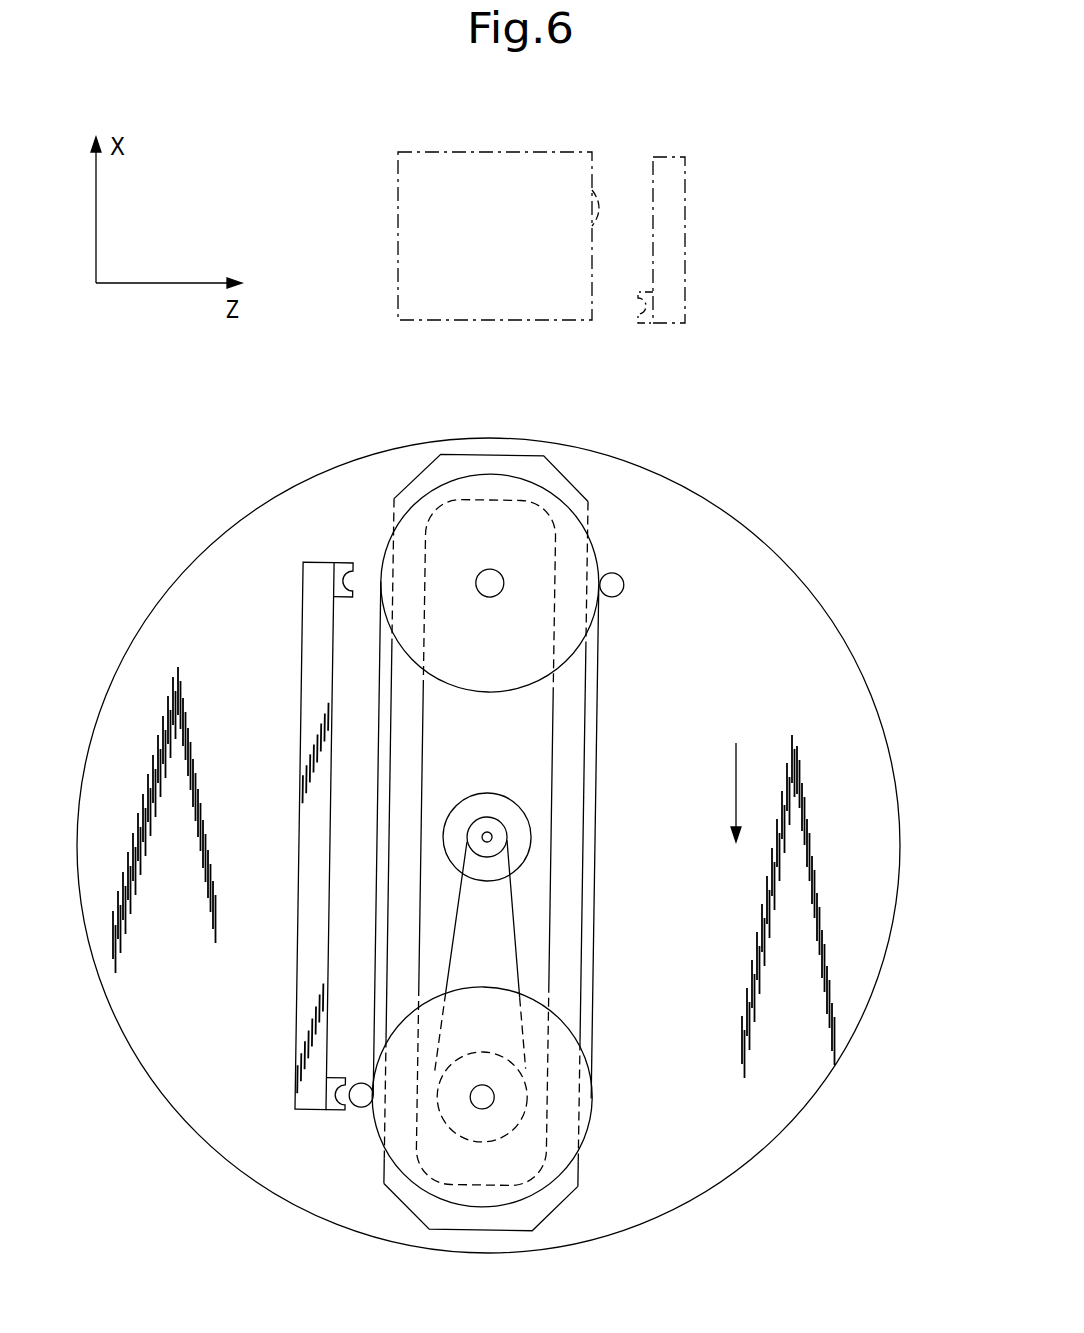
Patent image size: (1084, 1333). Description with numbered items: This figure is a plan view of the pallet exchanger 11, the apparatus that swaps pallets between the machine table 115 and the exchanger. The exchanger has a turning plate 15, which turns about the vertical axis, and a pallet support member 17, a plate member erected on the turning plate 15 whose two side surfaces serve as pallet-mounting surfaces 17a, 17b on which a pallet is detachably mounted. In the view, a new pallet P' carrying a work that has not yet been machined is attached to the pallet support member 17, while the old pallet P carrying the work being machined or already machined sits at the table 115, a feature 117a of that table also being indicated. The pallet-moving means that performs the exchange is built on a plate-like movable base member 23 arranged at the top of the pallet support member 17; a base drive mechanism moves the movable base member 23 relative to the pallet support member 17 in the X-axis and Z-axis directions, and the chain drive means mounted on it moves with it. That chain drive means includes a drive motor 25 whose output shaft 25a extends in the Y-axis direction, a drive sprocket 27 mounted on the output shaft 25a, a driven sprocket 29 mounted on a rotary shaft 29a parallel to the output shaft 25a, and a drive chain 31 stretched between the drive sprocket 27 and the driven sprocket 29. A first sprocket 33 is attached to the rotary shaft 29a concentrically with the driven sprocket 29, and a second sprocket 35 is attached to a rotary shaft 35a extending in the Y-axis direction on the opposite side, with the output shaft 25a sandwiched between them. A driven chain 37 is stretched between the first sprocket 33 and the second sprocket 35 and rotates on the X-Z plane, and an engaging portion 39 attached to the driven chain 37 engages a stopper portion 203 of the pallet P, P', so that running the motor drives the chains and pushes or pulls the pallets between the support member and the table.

The pallet exchanger 11 is at (501, 774).
The turning plate 15 is at (853, 698).
The pallet support member 17 is at (446, 811).
The pallet-mounting surface 17a is at (583, 843).
The pallet-mounting surface 17b is at (389, 841).
The movable base member 23 is at (535, 715).
The drive motor 25 is at (465, 810).
The output shaft 25a is at (495, 838).
The drive sprocket 27 is at (492, 830).
The driven sprocket 29 is at (500, 1075).
The rotary shaft 29a is at (495, 1095).
The drive chain 31 is at (515, 923).
The first sprocket 33 is at (565, 1137).
The second sprocket 35 is at (425, 505).
The rotary shaft 35a is at (490, 590).
The driven chain 37 is at (598, 734).
The engaging portion 39 is at (625, 586).
The table 115 is at (470, 197).
The plate projection 117a is at (593, 188).
The stopper portion 203 is at (345, 566).
The old pallet P is at (704, 240).
The new pallet P' is at (280, 835).